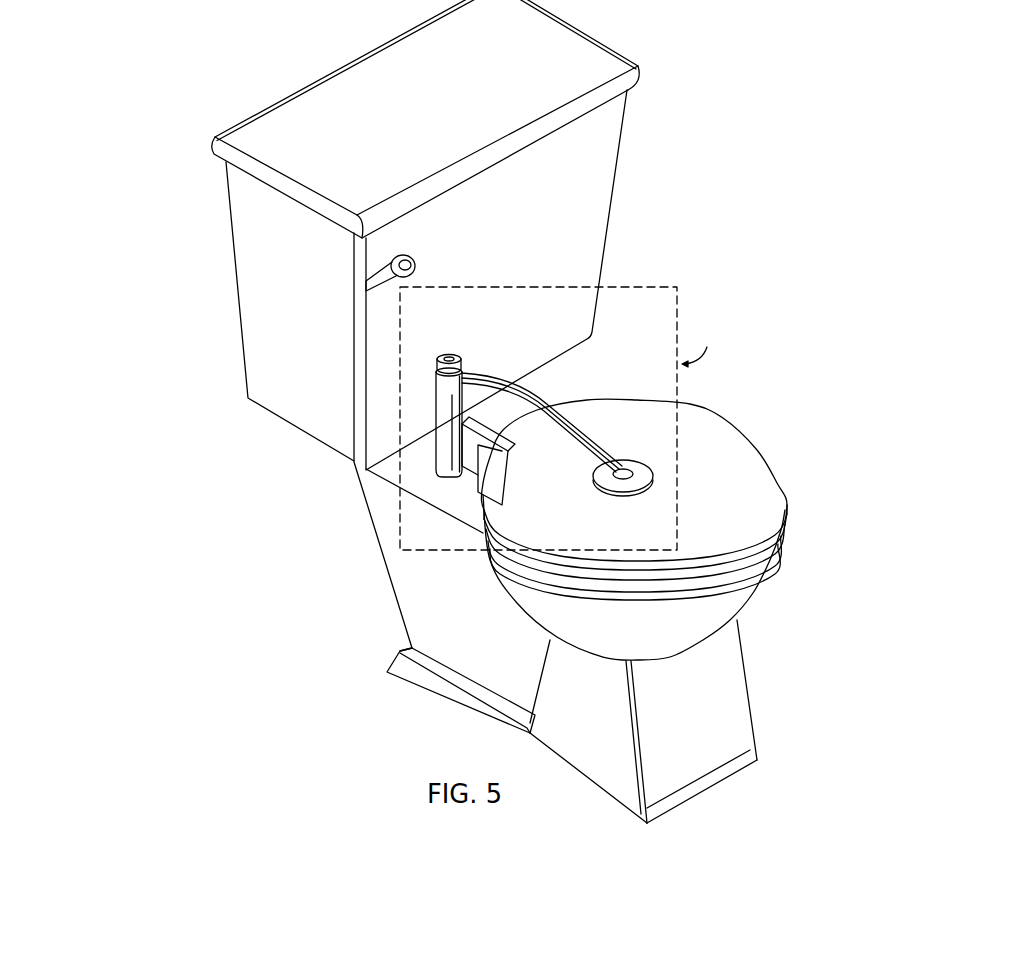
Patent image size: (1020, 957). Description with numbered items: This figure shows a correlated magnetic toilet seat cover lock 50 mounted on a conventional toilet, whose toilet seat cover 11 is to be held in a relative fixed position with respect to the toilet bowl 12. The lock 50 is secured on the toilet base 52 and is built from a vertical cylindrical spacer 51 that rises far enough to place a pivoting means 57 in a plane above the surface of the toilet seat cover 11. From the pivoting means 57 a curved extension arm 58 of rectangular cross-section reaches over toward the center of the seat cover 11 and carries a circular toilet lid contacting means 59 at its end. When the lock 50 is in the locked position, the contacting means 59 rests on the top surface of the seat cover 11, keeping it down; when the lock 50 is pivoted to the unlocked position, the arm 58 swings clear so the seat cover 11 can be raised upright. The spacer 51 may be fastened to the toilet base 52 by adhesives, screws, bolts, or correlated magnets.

The toilet seat cover 11 is at (733, 513).
The toilet bowl 12 is at (550, 610).
The correlated magnetic toilet seat cover lock 50 is at (395, 422).
The reservoir cylinder 51 is at (440, 463).
The toilet base 52 is at (463, 492).
The pivoting means 57 is at (443, 365).
The extension arm 58 is at (565, 418).
The toilet lid contacting means 59 is at (637, 477).